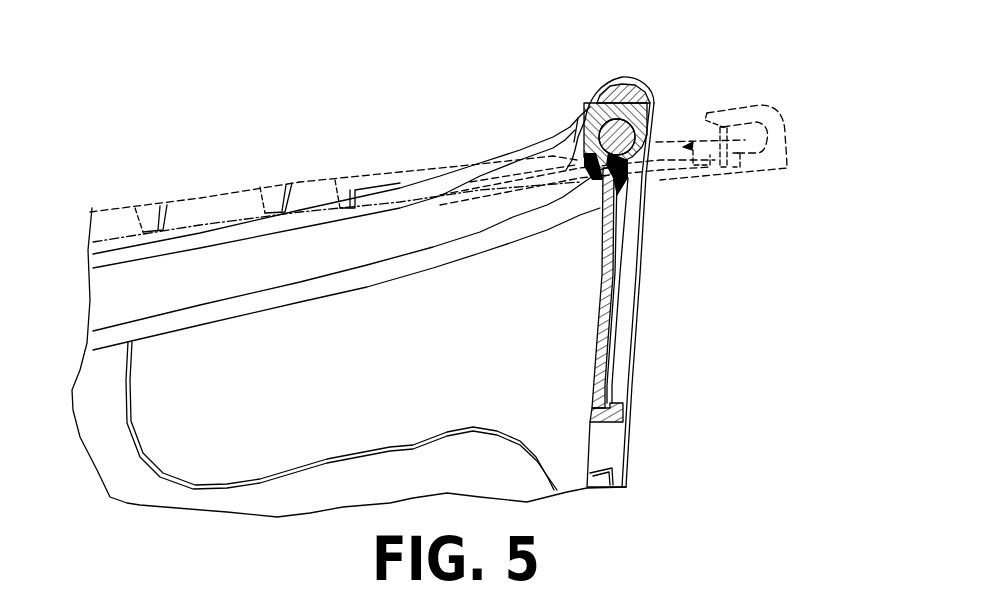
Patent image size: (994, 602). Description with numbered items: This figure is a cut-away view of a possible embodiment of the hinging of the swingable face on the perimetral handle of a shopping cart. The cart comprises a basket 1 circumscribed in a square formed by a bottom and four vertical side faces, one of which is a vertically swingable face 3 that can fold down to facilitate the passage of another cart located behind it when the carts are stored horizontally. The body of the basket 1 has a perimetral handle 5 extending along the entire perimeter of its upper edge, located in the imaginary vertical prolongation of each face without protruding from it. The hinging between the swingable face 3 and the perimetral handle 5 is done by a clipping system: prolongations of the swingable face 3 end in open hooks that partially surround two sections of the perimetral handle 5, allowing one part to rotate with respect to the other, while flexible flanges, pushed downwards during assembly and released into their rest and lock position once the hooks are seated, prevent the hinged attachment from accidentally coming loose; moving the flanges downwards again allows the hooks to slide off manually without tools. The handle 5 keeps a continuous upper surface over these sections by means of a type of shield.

The basket 1 is at (140, 483).
The swingable face 3 is at (313, 177).
The perimetral handle 5 is at (346, 226).